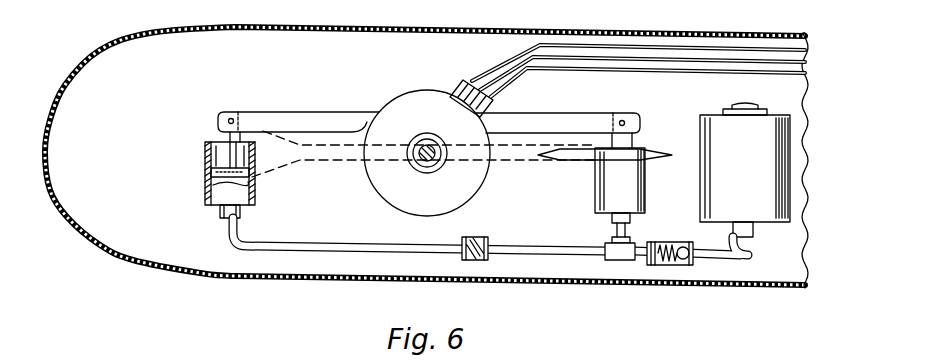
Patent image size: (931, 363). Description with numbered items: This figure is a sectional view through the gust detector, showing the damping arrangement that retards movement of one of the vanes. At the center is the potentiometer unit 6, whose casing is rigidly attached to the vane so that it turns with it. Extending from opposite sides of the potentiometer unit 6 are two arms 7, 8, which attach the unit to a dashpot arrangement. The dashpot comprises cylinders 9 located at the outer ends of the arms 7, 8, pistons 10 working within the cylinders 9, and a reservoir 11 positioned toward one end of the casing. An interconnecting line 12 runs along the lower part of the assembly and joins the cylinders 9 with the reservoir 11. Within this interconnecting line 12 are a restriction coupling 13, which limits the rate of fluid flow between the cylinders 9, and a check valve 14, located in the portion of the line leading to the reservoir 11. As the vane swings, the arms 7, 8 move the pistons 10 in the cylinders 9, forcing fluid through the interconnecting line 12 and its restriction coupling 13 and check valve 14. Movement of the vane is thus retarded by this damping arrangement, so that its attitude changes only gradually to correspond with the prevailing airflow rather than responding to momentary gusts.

The potentiometer unit 6 is at (429, 94).
The arm 7 is at (319, 108).
The arm 8 is at (563, 110).
The cylinder 9 is at (205, 161).
The piston 10 is at (250, 171).
The reservoir 11 is at (716, 105).
The interconnecting line 12 is at (342, 246).
The restriction coupling 13 is at (473, 243).
The check valve 14 is at (663, 246).